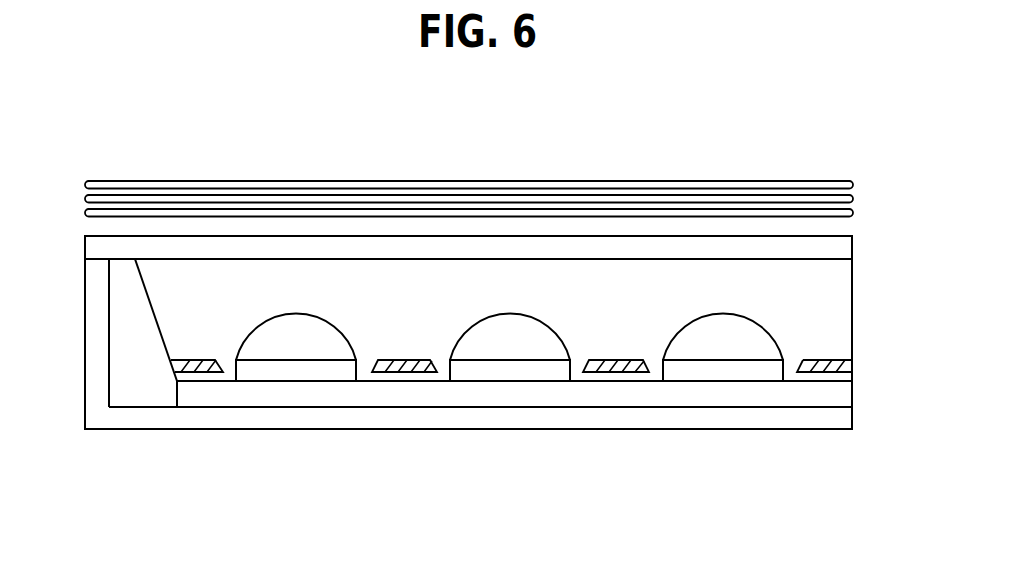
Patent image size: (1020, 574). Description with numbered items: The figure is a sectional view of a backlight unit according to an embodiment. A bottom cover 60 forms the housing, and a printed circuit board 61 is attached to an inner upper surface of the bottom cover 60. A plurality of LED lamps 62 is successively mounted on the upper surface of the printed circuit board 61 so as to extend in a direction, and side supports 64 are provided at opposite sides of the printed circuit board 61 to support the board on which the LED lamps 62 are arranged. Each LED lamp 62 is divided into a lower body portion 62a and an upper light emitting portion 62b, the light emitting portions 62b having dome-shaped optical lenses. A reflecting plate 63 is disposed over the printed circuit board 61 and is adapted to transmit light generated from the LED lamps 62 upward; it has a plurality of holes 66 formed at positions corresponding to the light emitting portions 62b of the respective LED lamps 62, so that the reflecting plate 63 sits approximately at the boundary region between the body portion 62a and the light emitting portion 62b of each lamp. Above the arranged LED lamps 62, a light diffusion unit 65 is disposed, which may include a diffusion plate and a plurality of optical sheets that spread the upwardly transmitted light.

The bottom cover 60 is at (843, 412).
The printed circuit board 61 is at (843, 387).
The LED lamp 62 is at (509, 408).
The body portion 62a is at (263, 377).
The light emitting portion 62b is at (509, 381).
The reflecting plate 63 is at (843, 363).
The side support 64 is at (115, 364).
The light diffusion unit 65 is at (863, 181).
The hole 66 is at (652, 353).